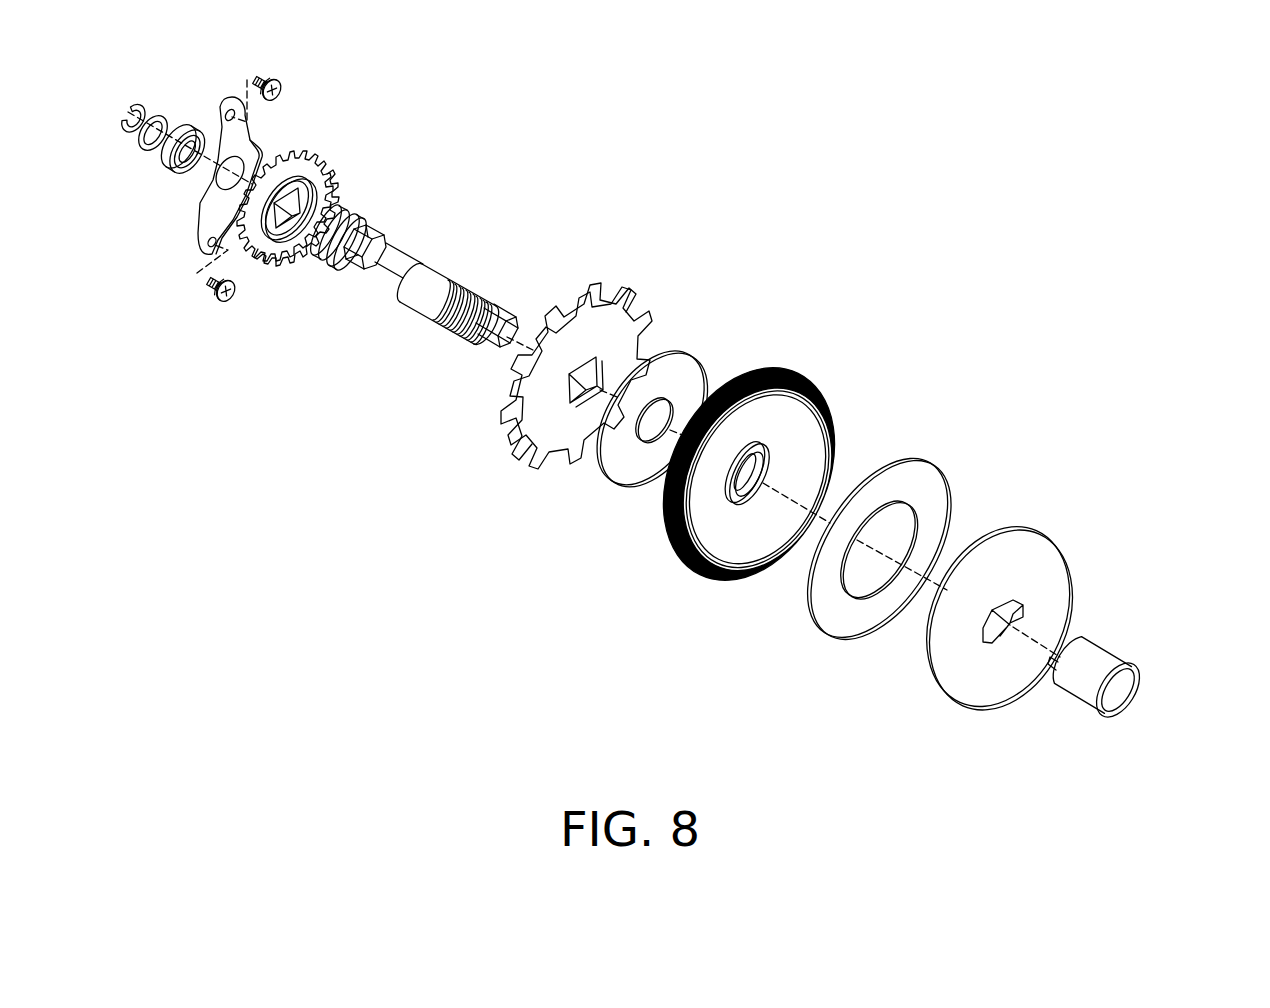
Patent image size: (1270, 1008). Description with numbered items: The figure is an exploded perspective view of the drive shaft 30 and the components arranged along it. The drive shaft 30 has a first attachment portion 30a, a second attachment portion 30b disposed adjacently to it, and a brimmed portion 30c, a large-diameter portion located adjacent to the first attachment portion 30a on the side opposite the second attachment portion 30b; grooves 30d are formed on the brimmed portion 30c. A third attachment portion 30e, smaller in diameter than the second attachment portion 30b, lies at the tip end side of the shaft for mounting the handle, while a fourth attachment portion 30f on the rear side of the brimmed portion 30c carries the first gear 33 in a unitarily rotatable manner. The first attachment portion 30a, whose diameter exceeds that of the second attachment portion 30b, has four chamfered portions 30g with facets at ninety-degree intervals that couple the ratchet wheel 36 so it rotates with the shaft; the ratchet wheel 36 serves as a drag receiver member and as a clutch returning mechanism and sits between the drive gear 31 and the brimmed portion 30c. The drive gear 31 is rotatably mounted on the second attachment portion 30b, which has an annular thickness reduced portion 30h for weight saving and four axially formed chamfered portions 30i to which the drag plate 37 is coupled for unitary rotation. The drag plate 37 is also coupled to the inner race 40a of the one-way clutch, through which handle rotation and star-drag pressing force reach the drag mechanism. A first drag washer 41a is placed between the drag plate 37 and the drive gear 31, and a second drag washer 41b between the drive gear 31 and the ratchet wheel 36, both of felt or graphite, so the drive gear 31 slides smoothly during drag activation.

The drive shaft 30 is at (471, 362).
The first attachment portion 30a is at (352, 215).
The second attachment portion 30b is at (447, 270).
The brimmed portion 30c is at (322, 260).
The grooves 30d is at (343, 268).
The third attachment portion 30e is at (508, 320).
The fourth attachment portion 30f is at (337, 212).
The chamfered portions 30g is at (330, 272).
The thickness reduced portion 30h is at (398, 265).
The chamfered portions 30i is at (373, 230).
The drive gear 31 is at (808, 372).
The first gear 33 is at (300, 146).
The ratchet wheel 36 is at (622, 290).
The drag plate 37 is at (1030, 530).
The inner race 40a is at (1100, 653).
The first drag washer 41a is at (927, 468).
The second drag washer 41b is at (688, 362).